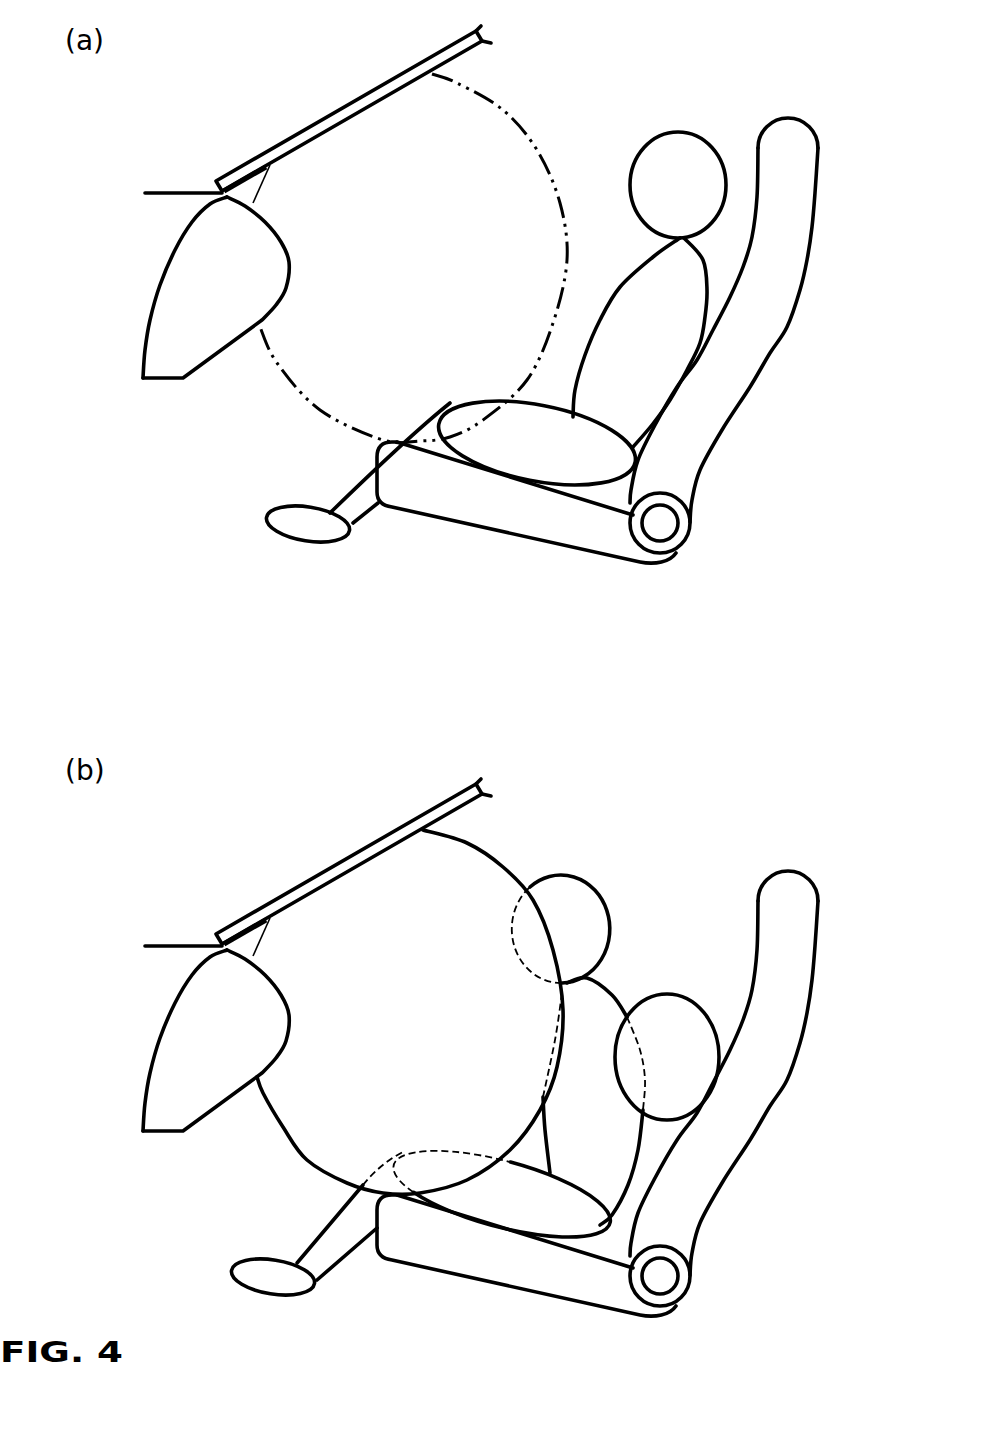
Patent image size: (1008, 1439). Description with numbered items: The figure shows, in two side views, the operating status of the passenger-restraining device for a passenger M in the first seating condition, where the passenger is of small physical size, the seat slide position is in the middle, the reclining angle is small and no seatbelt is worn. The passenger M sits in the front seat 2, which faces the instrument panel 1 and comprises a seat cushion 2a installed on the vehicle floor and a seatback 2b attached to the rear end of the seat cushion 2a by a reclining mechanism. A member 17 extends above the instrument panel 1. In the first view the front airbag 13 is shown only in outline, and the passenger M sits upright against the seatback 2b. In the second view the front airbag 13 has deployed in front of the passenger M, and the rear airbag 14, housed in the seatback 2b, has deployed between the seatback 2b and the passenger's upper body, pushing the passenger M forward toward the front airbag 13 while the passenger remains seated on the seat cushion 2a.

The instrument panel 1 is at (182, 287).
The front seat 2 is at (842, 190).
The seat cushion 2a is at (497, 512).
The seatback 2b is at (788, 260).
The front airbag 13 is at (293, 393).
The rear airbag 14 is at (690, 997).
The windshield 17 is at (411, 77).
The passenger M is at (631, 262).